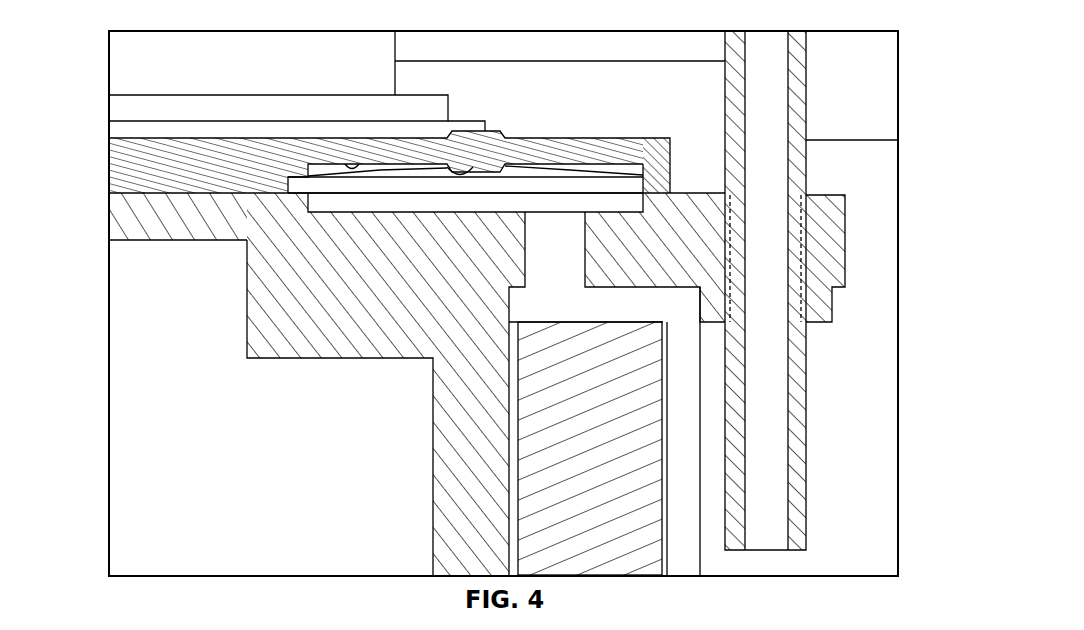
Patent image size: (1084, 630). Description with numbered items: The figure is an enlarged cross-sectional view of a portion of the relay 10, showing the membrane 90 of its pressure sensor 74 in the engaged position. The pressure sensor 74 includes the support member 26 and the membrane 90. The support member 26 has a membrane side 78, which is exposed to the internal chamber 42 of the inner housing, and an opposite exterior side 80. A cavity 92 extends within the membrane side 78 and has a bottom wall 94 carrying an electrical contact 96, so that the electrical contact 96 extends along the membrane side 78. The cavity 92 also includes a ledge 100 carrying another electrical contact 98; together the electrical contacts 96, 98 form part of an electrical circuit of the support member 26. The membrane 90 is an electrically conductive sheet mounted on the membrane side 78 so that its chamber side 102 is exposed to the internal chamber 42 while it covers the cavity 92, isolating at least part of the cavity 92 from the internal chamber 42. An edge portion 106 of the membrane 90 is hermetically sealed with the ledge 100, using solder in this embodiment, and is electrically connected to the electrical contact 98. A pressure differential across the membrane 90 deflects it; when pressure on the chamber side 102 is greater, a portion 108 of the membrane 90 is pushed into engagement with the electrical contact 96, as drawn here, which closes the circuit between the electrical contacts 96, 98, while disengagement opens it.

The relay 10 is at (276, 20).
The support member 26 is at (122, 162).
The internal chamber 42 is at (713, 550).
The pressure sensor 74 is at (613, 113).
The membrane side 78 is at (160, 197).
The exterior side 80 is at (207, 108).
The membrane 90 is at (598, 170).
The cavity 92 is at (325, 160).
The bottom wall 94 is at (345, 162).
The electrical contact 96 is at (448, 168).
The electrical contact 98 is at (657, 191).
The ledge 100 is at (300, 172).
The chamber side 102 is at (329, 196).
The edge portion 106 is at (655, 198).
The portion 108 is at (486, 174).